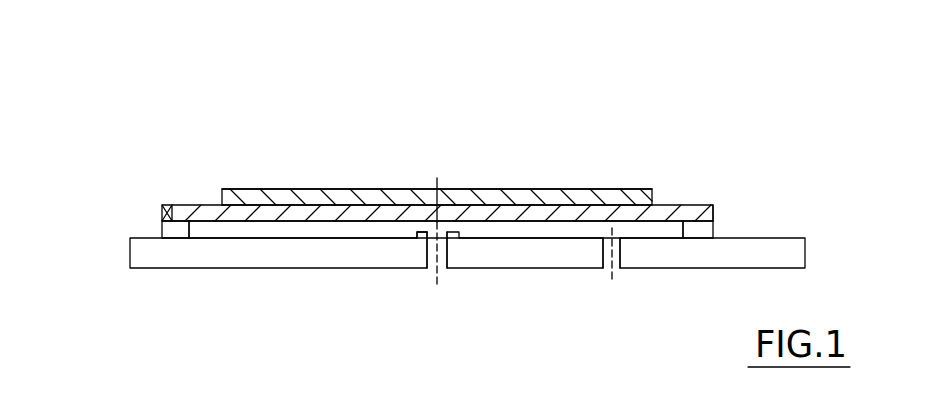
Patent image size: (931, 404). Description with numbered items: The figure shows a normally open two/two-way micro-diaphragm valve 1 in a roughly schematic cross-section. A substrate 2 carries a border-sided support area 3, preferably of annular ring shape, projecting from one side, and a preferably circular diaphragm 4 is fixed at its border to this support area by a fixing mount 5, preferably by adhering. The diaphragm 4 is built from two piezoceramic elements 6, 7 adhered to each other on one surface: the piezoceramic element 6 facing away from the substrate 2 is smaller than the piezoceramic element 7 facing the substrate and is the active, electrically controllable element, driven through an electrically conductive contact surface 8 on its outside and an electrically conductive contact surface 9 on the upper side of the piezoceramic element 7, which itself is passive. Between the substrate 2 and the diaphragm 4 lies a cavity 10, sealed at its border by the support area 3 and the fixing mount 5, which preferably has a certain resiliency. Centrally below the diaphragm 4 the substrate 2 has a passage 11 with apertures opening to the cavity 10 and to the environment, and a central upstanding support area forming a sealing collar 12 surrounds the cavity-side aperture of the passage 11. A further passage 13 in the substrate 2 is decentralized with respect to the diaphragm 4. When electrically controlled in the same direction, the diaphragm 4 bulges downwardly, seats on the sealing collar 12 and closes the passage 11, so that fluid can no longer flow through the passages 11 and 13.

The micro-diaphragm valve 1 is at (506, 145).
The substrate 2 is at (192, 285).
The support area 3 is at (167, 233).
The diaphragm 4 is at (343, 190).
The fixing mount 5 is at (162, 206).
The piezoceramic element 6 is at (572, 188).
The piezoceramic element 7 is at (713, 205).
The electrically conductive contact surface 8 is at (395, 188).
The electrically conductive contact surface 9 is at (679, 204).
The cavity 10 is at (261, 232).
The passage 11 is at (435, 262).
The sealing collar 12 is at (417, 233).
The passage 13 is at (608, 268).